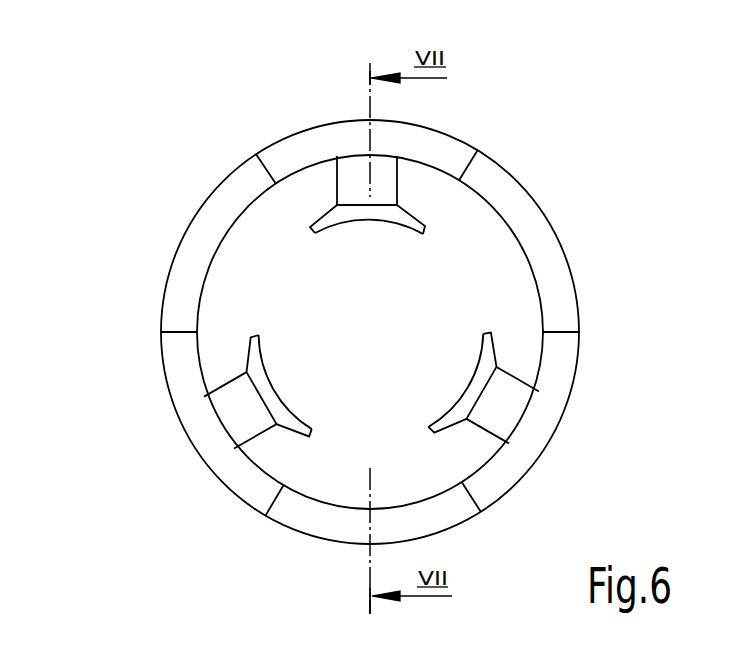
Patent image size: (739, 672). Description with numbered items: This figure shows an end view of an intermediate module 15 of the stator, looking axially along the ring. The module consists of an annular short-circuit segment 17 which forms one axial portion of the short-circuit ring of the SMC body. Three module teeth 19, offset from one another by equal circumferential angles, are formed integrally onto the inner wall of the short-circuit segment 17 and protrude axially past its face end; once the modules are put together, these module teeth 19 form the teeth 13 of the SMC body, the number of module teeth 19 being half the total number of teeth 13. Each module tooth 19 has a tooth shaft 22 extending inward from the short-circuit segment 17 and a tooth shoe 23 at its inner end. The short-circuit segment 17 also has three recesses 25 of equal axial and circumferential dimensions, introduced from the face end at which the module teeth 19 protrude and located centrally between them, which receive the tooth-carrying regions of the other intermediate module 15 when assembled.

The teeth 13 is at (383, 301).
The intermediate module 15 is at (361, 342).
The short-circuit segment 17 is at (505, 168).
The module teeth 19 is at (378, 186).
The tooth shaft 22 is at (387, 378).
The tooth shoe 23 is at (343, 216).
The recesses 25 is at (193, 250).